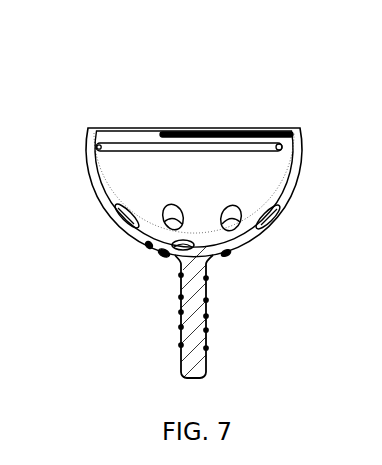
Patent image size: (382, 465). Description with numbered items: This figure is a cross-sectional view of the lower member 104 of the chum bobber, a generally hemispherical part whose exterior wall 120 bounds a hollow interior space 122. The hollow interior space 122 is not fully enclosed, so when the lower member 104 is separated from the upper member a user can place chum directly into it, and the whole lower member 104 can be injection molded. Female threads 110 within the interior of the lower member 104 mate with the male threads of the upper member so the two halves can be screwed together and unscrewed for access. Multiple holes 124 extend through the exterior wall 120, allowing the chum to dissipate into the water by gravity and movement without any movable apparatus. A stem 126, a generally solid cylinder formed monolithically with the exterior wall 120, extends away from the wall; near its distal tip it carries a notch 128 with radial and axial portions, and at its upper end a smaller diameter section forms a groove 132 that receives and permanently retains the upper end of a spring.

The lower member 104 is at (108, 80).
The female threads 110 is at (224, 132).
The exterior wall 120 is at (273, 223).
The hollow interior space 122 is at (214, 196).
The holes 124 is at (130, 215).
The stem 126 is at (200, 366).
The notch 128 is at (182, 340).
The groove 132 is at (205, 282).